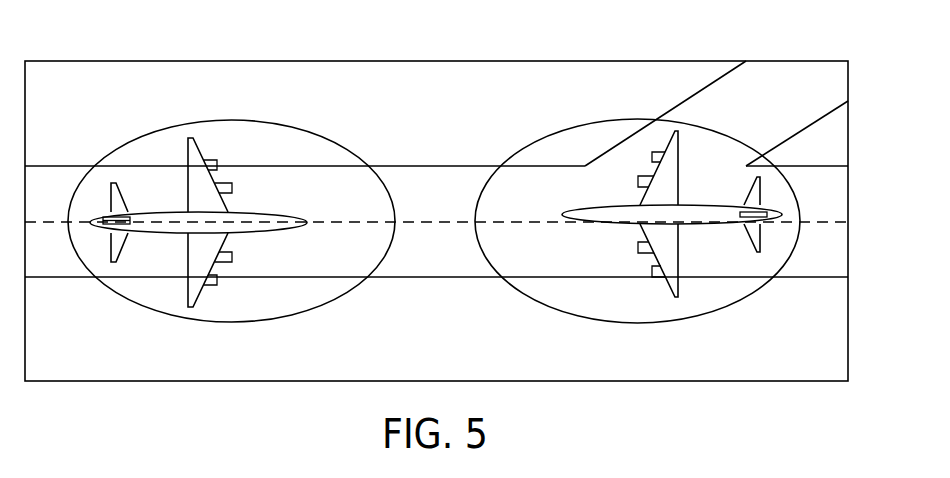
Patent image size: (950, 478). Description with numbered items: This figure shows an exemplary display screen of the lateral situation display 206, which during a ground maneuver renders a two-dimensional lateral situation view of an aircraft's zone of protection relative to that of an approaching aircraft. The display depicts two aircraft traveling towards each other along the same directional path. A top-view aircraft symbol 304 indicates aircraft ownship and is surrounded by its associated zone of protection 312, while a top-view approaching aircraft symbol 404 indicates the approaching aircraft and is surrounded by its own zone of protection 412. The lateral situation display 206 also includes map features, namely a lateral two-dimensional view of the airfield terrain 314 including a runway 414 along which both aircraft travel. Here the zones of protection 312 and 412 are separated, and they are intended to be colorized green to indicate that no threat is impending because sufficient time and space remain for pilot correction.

The lateral situation display 206 is at (822, 61).
The top-view aircraft symbol 304 is at (273, 213).
The zone of protection 312 is at (330, 140).
The airfield terrain 314 is at (392, 275).
The top-view approaching aircraft symbol 404 is at (598, 215).
The zone of protection 412 is at (737, 303).
The runway 414 is at (398, 165).